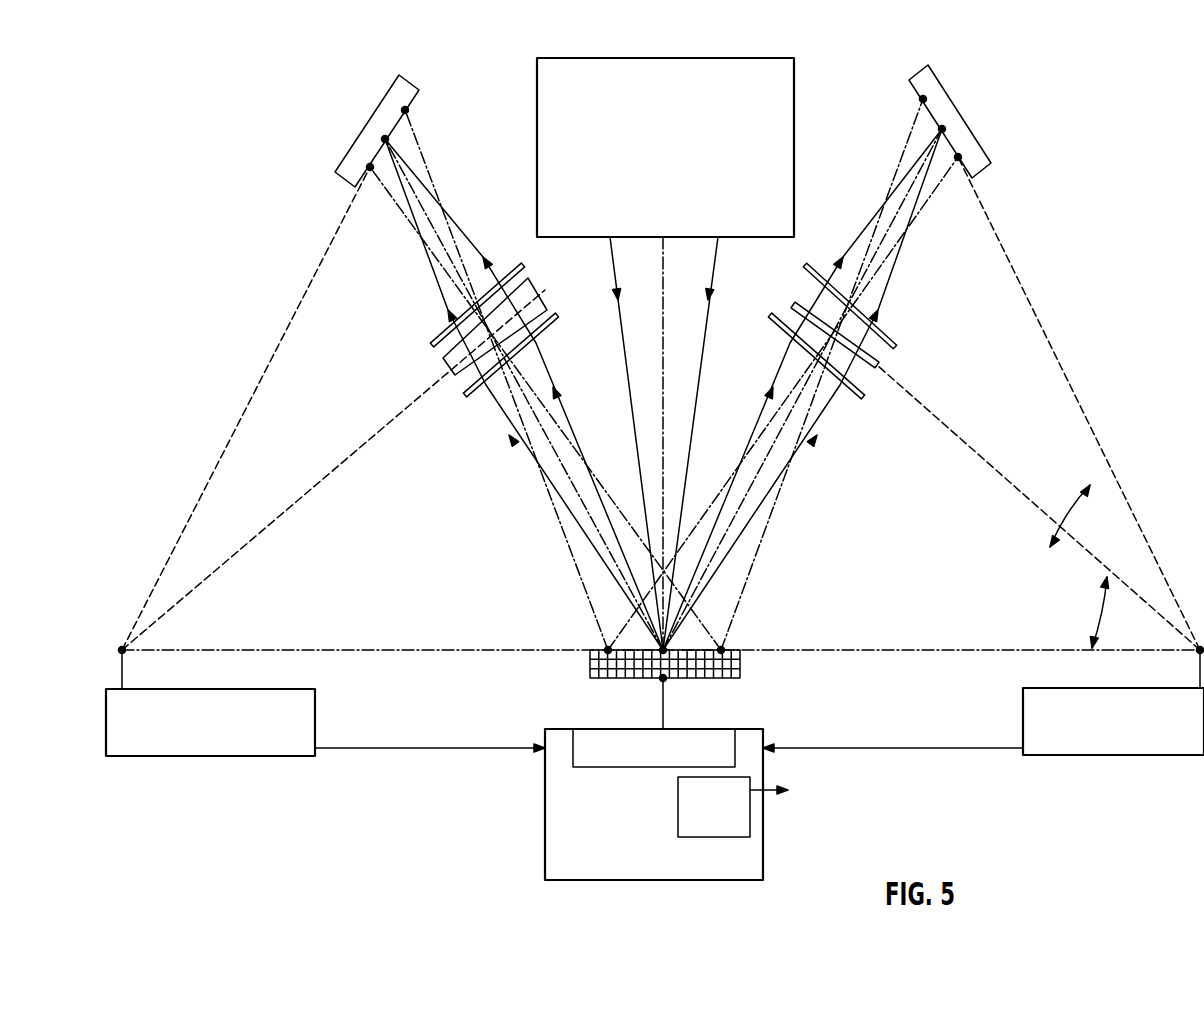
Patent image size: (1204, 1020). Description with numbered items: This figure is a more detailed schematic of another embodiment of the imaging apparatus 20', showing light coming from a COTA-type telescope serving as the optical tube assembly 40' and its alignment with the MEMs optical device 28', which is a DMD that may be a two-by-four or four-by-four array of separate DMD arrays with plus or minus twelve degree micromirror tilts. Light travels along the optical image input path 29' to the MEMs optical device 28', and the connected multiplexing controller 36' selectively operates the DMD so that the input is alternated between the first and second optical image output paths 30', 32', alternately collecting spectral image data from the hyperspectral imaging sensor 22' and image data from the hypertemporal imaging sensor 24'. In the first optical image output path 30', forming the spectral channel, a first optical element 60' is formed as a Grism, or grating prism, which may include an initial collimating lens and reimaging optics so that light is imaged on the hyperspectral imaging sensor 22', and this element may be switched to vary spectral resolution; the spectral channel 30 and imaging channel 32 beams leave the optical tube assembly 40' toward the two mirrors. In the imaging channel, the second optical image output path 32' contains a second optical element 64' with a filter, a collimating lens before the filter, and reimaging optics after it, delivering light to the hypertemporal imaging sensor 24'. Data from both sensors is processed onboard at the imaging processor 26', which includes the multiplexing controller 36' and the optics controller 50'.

The imaging apparatus 20' is at (655, 467).
The hyperspectral imaging sensor 22' is at (373, 131).
The hypertemporal imaging sensor 24' is at (955, 121).
The imaging processor 26' is at (666, 828).
The MEMs optical device 28' is at (641, 672).
The optical image input path 29' is at (704, 121).
The first optical image output path 30' is at (210, 750).
The second optical image output path 32' is at (1113, 749).
The multiplexing controller 36' is at (618, 767).
The optical tube assembly 40' is at (704, 147).
The optics controller 50' is at (755, 809).
The first optical element 60' is at (456, 330).
The second optical element 64' is at (884, 383).
The spectral channel beam path 30 is at (626, 443).
The imaging channel beam path 32 is at (704, 443).